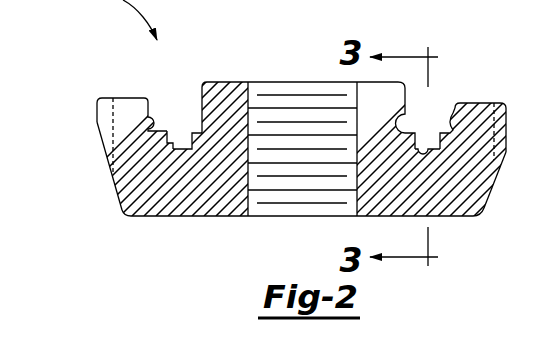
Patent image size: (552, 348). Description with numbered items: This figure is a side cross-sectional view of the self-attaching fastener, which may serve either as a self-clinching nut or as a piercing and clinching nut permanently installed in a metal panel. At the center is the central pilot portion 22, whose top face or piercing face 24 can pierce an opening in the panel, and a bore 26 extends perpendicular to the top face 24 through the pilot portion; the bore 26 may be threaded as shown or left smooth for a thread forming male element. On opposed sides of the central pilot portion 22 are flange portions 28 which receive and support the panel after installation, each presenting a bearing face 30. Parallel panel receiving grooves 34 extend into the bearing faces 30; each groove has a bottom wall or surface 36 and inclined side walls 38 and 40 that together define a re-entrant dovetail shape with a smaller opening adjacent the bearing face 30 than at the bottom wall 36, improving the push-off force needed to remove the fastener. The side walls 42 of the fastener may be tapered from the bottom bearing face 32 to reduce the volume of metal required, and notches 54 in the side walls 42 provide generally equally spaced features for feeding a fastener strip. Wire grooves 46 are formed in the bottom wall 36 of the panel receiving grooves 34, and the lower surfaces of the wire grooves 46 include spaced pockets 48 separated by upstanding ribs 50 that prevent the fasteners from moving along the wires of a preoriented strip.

The central pilot portion 22 is at (397, 80).
The top face or piercing face 24 is at (233, 80).
The bore 26 is at (257, 117).
The flange portion 28 is at (99, 109).
The bearing face 30 is at (126, 97).
The bottom bearing face 32 is at (182, 216).
The panel receiving groove 34 is at (441, 99).
The bottom wall or surface 36 is at (104, 148).
The inclined side wall 38 is at (149, 116).
The inclined side wall 40 is at (206, 114).
The side wall 42 is at (507, 120).
The wire groove 46 is at (172, 146).
The pocket 48 is at (187, 152).
The upstanding rib 50 is at (426, 152).
The notch 54 is at (495, 163).